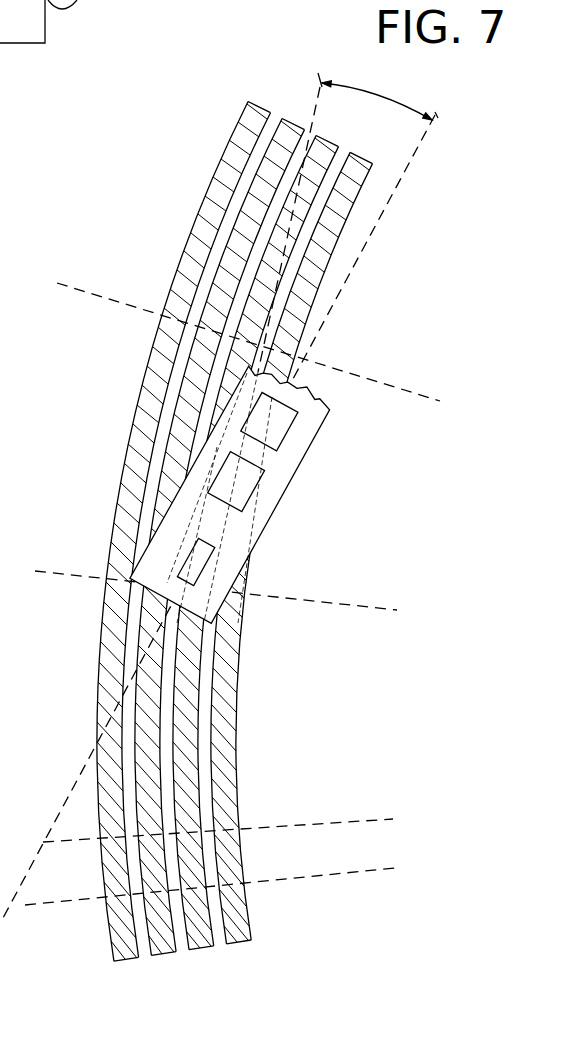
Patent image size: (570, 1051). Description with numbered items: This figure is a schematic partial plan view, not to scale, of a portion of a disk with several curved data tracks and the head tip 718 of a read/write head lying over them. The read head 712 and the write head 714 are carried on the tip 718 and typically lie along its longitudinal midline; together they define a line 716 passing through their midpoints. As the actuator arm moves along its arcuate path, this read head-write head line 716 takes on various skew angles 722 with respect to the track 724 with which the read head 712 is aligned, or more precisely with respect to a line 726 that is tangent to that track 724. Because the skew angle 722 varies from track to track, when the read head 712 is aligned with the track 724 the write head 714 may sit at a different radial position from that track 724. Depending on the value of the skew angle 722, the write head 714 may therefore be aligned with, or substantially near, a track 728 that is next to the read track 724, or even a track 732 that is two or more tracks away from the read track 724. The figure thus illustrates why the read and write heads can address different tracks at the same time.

The read head 712 is at (288, 434).
The write head 714 is at (205, 571).
The read head-write head line 716 is at (424, 140).
The tip 718 is at (294, 473).
The skew angle 722 is at (379, 96).
The track 724 is at (238, 942).
The tangent line 726 is at (314, 103).
The adjacent track 728 is at (200, 950).
The distant track 732 is at (160, 955).